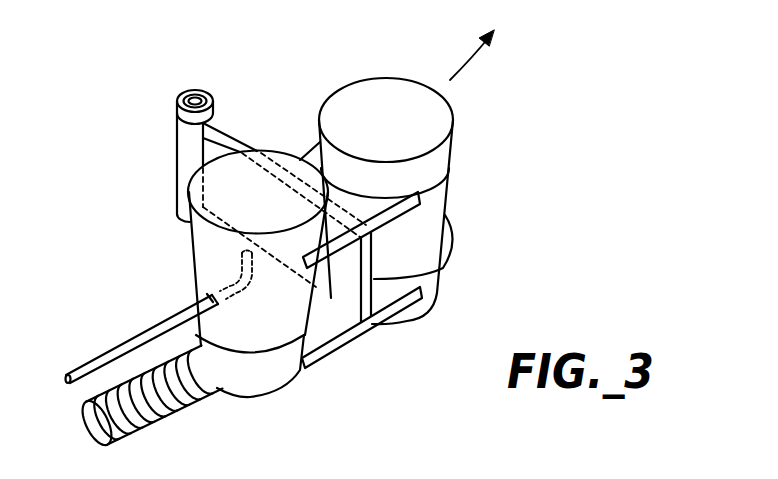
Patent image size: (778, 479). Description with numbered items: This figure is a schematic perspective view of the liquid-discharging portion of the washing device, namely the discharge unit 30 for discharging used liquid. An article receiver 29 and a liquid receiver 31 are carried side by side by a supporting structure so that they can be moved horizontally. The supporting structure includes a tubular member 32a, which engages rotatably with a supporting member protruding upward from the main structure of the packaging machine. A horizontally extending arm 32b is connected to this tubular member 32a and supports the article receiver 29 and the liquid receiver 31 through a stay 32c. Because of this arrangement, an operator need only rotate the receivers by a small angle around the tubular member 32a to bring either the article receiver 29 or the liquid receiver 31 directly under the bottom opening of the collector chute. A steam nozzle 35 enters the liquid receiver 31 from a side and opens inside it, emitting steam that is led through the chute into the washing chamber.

The article receiver 29 is at (438, 175).
The discharge unit 30 is at (305, 70).
The liquid receiver 31 is at (192, 243).
The tubular member 32a is at (184, 148).
The horizontally extending arm 32b is at (226, 125).
The stay 32c is at (338, 323).
The steam nozzle 35 is at (222, 278).